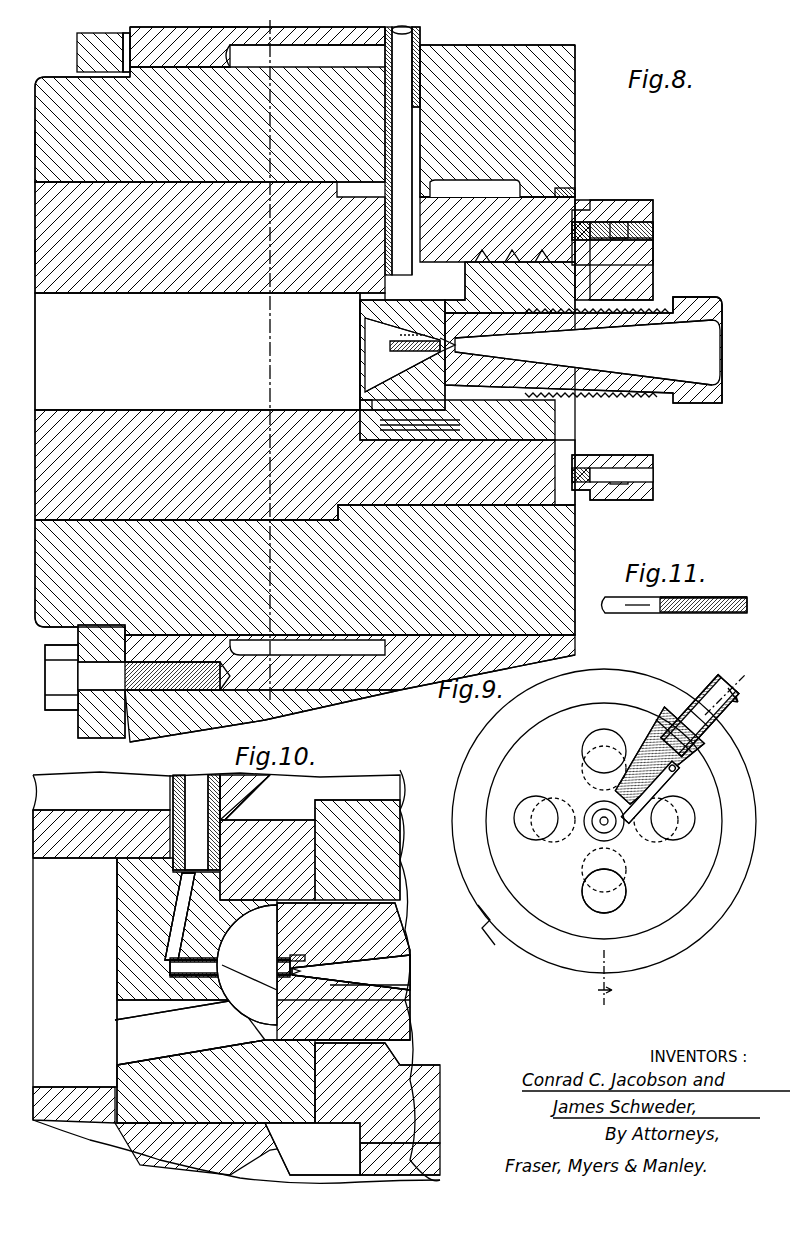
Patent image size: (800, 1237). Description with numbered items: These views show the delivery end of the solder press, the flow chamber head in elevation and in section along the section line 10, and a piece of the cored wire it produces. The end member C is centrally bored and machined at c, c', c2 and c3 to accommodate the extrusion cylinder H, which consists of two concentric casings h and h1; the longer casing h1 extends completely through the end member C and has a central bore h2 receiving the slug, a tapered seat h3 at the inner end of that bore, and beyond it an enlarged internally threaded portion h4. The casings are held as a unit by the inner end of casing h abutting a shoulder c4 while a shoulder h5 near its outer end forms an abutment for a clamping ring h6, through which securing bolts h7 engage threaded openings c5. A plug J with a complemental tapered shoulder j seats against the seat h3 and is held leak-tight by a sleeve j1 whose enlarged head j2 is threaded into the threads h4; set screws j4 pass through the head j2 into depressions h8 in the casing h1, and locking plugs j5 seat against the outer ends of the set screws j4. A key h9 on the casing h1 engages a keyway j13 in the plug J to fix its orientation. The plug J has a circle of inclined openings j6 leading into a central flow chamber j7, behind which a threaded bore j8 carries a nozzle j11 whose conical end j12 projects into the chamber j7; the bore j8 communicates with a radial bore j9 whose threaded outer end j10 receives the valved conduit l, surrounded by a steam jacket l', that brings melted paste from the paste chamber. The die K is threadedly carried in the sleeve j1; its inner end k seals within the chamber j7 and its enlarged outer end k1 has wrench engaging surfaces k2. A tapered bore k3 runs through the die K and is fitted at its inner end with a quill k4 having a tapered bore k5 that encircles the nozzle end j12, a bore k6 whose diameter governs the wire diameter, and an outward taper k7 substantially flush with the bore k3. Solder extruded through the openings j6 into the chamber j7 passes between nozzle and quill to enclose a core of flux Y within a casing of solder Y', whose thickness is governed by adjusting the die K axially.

In FIG. 8, the extrusion cylinder H is at (37, 493).
In FIG. 8, the outer casing h is at (42, 153).
In FIG. 8, the inner casing h1 is at (42, 270).
In FIG. 8, the central bore h2 is at (197, 351).
In FIG. 10, the central bore h2 is at (101, 949).
In FIG. 8, the tapered seat h3 is at (372, 298).
In FIG. 8, the internal screw threads h4 is at (483, 258).
In FIG. 10, the internal screw threads h4 is at (375, 1160).
In FIG. 8, the shoulder h5 is at (82, 50).
In FIG. 8, the clamping ring h6 is at (80, 58).
In FIG. 8, the securing bolts h7 is at (52, 690).
In FIG. 8, the depressions h8 is at (560, 510).
In FIG. 8, the key or spline h9 is at (412, 426).
In FIG. 8, the end member C is at (182, 36).
In FIG. 8, the bore portion c is at (220, 21).
In FIG. 8, the bore portion c' is at (342, 27).
In FIG. 8, the bore portion c2 is at (476, 183).
In FIG. 8, the bore portion c3 is at (562, 192).
In FIG. 8, the shoulder c4 is at (470, 80).
In FIG. 8, the threaded openings c5 is at (128, 735).
In FIG. 8, the valved conduit l is at (402, 150).
In FIG. 9, the valved conduit l is at (657, 705).
In FIG. 10, the valved conduit l is at (196, 822).
In FIG. 8, the steam jacket l' is at (428, 58).
In FIG. 8, the plug J is at (365, 360).
In FIG. 9, the plug J is at (604, 821).
In FIG. 10, the plug J is at (117, 963).
In FIG. 8, the tapered shoulder j is at (368, 403).
In FIG. 8, the sleeve j1 is at (582, 215).
In FIG. 10, the sleeve j1 is at (432, 1096).
In FIG. 8, the enlarged head j2 is at (640, 202).
In FIG. 8, the set screws j4 is at (600, 228).
In FIG. 8, the locking plugs j5 is at (640, 228).
In FIG. 8, the perforations j6 is at (367, 328).
In FIG. 9, the perforations j6 is at (585, 900).
In FIG. 10, the perforations j6 is at (190, 1032).
In FIG. 8, the central chamber j7 is at (432, 372).
In FIG. 10, the central chamber j7 is at (249, 998).
In FIG. 9, the central bore j8 is at (596, 838).
In FIG. 10, the central bore j8 is at (170, 972).
In FIG. 9, the radial bore j9 is at (620, 767).
In FIG. 10, the radial bore j9 is at (180, 912).
In FIG. 9, the threaded bore j10 is at (614, 715).
In FIG. 10, the nozzle j11 is at (250, 958).
In FIG. 10, the conical end j12 is at (232, 1008).
In FIG. 9, the keyway j13 is at (500, 945).
In FIG. 8, the die K is at (583, 350).
In FIG. 10, the die K is at (410, 940).
In FIG. 8, the inner end of die k is at (444, 345).
In FIG. 10, the inner end of die k is at (292, 950).
In FIG. 8, the enlarged end of die k1 is at (722, 304).
In FIG. 8, the wrench engaging surfaces k2 is at (690, 298).
In FIG. 8, the tapered bore k3 is at (595, 328).
In FIG. 10, the tapered bore k3 is at (400, 978).
In FIG. 10, the quill k4 is at (330, 970).
In FIG. 10, the tapered bore of quill k5 is at (343, 1020).
In FIG. 10, the sizing bore k6 is at (300, 955).
In FIG. 10, the outward taper k7 is at (345, 990).
In FIG. 11, the flux Y is at (682, 611).
In FIG. 11, the solder casing Y' is at (710, 587).
In FIG. 9, the section line 10 is at (682, 847).